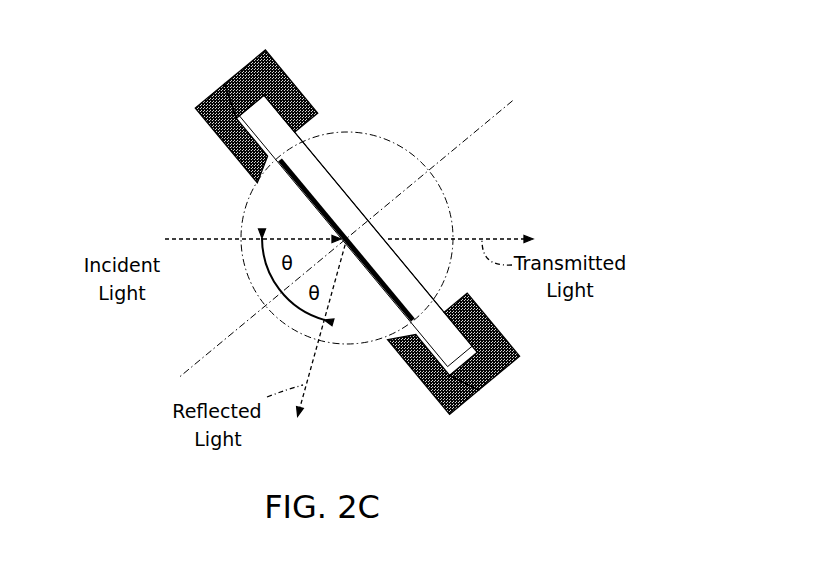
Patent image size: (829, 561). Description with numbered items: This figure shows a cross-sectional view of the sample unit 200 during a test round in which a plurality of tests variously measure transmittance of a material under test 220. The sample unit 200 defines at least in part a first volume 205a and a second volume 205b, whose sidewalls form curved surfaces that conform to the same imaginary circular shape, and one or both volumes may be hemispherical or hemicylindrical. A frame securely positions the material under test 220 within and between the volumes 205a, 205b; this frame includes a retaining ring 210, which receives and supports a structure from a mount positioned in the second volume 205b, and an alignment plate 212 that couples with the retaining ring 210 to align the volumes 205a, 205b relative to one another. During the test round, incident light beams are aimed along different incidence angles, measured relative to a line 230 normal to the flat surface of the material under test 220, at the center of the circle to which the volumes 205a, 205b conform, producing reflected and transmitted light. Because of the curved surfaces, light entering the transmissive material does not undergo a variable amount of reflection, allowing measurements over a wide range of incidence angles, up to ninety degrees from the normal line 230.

The sample unit 200 is at (54, 96).
The retaining ring 210 is at (313, 97).
The alignment plate 212 is at (224, 146).
The material under test 220 is at (366, 240).
The first volume 205a is at (338, 240).
The second volume 205b is at (370, 222).
The line normal to the target surface 230 is at (222, 347).